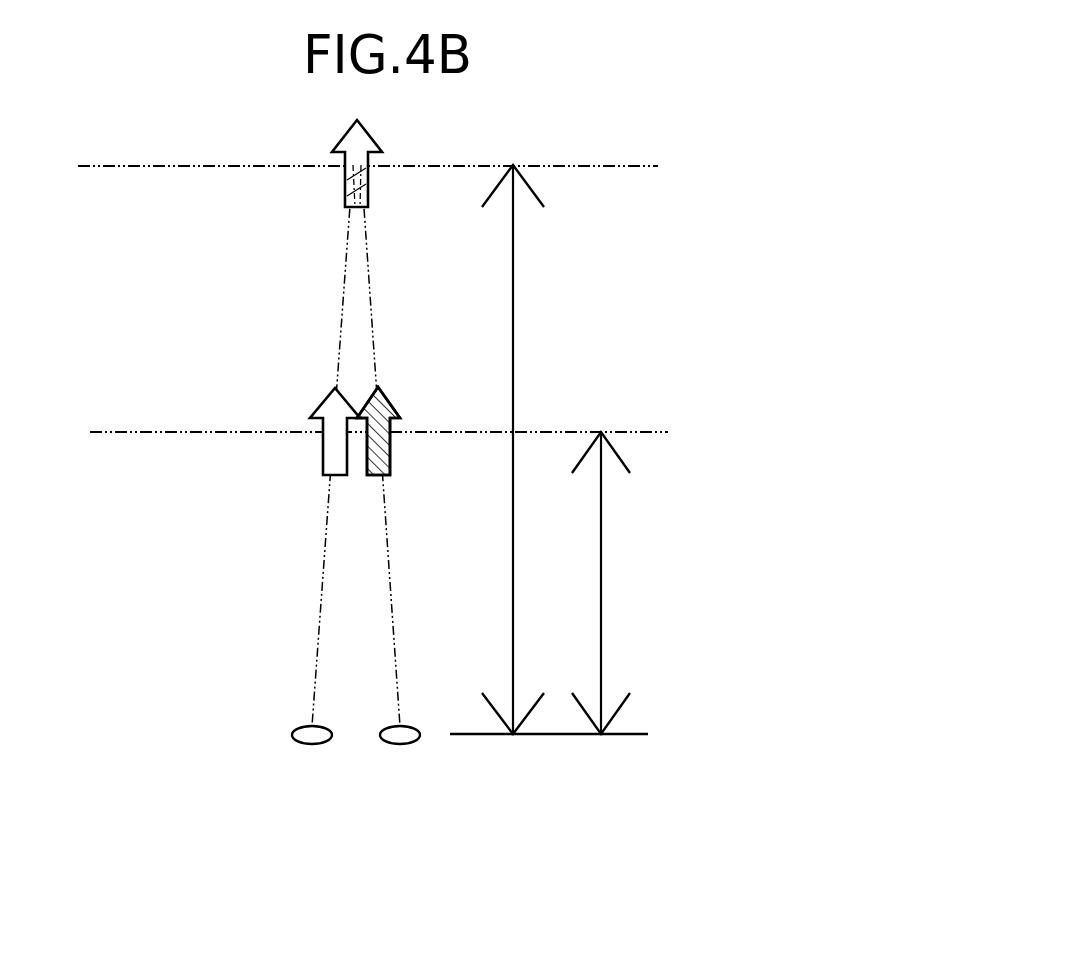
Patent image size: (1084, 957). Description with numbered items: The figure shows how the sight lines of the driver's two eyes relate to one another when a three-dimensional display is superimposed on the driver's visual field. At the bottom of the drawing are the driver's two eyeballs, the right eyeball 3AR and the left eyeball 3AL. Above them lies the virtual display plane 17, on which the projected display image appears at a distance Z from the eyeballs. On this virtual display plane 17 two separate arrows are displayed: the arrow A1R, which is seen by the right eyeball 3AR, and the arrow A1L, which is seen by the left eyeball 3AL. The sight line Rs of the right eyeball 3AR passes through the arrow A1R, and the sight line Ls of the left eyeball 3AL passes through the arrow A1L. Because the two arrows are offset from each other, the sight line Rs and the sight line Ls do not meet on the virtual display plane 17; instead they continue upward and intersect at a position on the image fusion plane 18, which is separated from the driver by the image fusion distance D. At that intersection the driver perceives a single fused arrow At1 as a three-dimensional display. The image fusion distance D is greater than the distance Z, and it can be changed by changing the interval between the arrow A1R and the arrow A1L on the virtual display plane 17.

The image fusion plane 18 is at (198, 167).
The virtual display plane 17 is at (208, 433).
The fused arrow At1 is at (362, 138).
The arrow A1L is at (320, 410).
The arrow A1R is at (395, 405).
The eyeball 3AL is at (312, 735).
The eyeball 3AR is at (400, 735).
The sight line Ls is at (322, 577).
The sight line Rs is at (392, 580).
The image fusion distance D is at (514, 314).
The distance Z is at (602, 562).